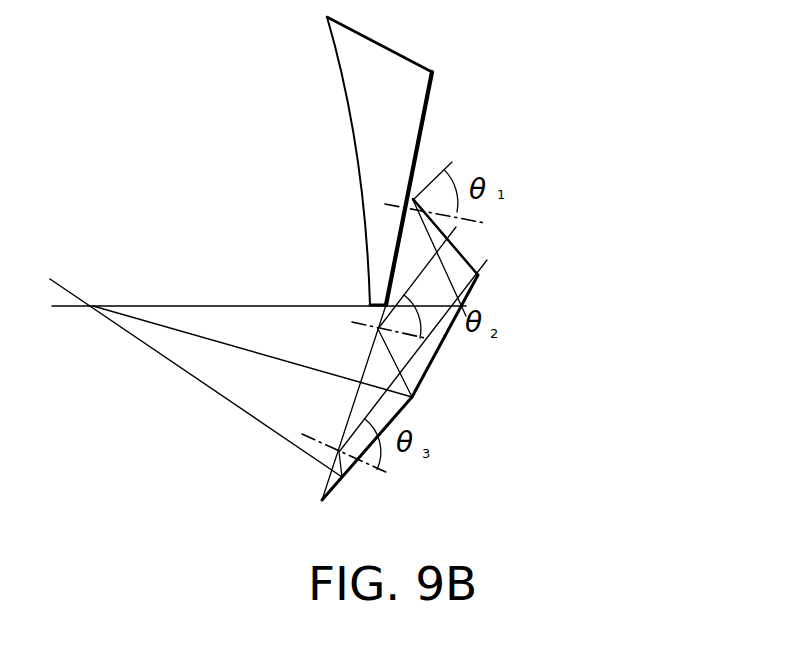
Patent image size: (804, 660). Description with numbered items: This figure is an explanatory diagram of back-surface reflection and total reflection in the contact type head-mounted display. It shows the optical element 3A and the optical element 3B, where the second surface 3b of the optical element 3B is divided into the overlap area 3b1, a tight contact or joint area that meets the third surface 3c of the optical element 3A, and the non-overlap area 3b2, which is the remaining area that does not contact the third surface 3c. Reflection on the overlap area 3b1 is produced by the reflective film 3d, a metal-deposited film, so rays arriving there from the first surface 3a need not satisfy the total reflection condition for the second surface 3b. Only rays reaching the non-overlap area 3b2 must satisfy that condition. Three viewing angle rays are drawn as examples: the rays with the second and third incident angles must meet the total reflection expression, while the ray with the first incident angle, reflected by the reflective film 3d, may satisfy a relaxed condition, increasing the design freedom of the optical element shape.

The optical element 3A is at (368, 115).
The optical element 3B is at (378, 368).
The first surface 3a is at (452, 233).
The second surface 3b is at (535, 337).
The overlap area 3b1 is at (478, 276).
The non-overlap area 3b2 is at (412, 400).
The third surface 3c is at (395, 420).
The reflective film 3d is at (428, 122).